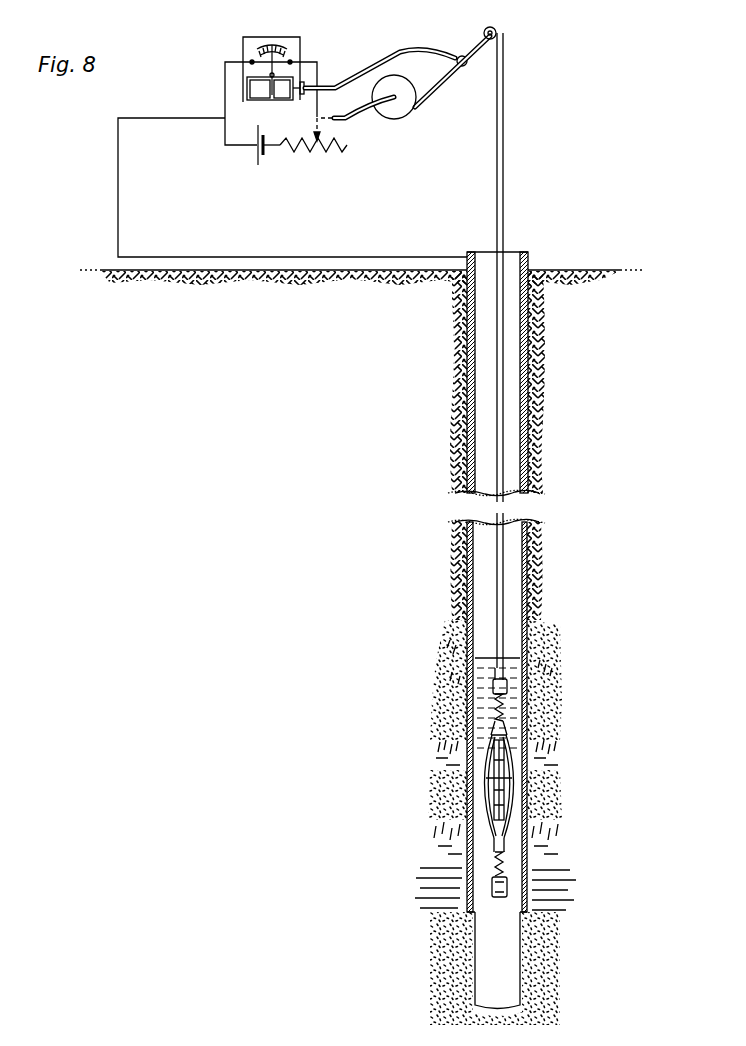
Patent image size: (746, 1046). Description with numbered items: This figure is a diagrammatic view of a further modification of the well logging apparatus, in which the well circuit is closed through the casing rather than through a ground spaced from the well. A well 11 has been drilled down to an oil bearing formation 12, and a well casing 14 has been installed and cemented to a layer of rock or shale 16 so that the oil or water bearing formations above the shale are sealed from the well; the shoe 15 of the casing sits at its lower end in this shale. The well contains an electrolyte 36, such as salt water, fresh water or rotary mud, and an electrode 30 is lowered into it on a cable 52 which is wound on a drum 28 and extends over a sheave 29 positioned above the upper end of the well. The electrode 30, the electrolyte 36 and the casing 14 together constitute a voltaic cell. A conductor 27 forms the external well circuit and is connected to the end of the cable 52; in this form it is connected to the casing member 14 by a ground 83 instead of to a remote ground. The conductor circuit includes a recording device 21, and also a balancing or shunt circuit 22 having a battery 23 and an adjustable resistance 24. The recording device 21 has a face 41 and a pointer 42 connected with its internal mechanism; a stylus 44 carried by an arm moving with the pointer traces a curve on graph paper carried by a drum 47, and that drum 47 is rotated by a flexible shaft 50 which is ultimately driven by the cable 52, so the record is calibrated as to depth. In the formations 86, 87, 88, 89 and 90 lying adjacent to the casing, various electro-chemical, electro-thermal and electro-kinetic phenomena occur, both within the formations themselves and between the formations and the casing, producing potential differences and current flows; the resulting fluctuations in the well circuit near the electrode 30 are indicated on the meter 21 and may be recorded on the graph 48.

The well 11 is at (521, 373).
The oil bearing formation 12 is at (535, 925).
The well casing 14 is at (460, 390).
The shoe 15 is at (460, 912).
The layer of rock or shale 16 is at (543, 868).
The recording device 21 is at (259, 76).
The balancing or shunt circuit 22 is at (224, 137).
The battery 23 is at (257, 152).
The adjustable resistance 24 is at (307, 149).
The conductor 27 is at (170, 118).
The drum 28 is at (400, 108).
The sheave 29 is at (497, 33).
The electrode 30 is at (545, 775).
The electrolyte 36 is at (513, 670).
The face 41 is at (258, 47).
The pointer 42 is at (252, 62).
The stylus 44 is at (277, 100).
The drum 47 is at (252, 86).
The graph 48 is at (257, 98).
The flexible shaft 50 is at (421, 50).
The cable 52 is at (504, 90).
The ground 83 is at (465, 252).
The formation 86 is at (442, 853).
The formation 87 is at (438, 805).
The formation 88 is at (440, 760).
The formation 89 is at (445, 722).
The formation 90 is at (446, 680).